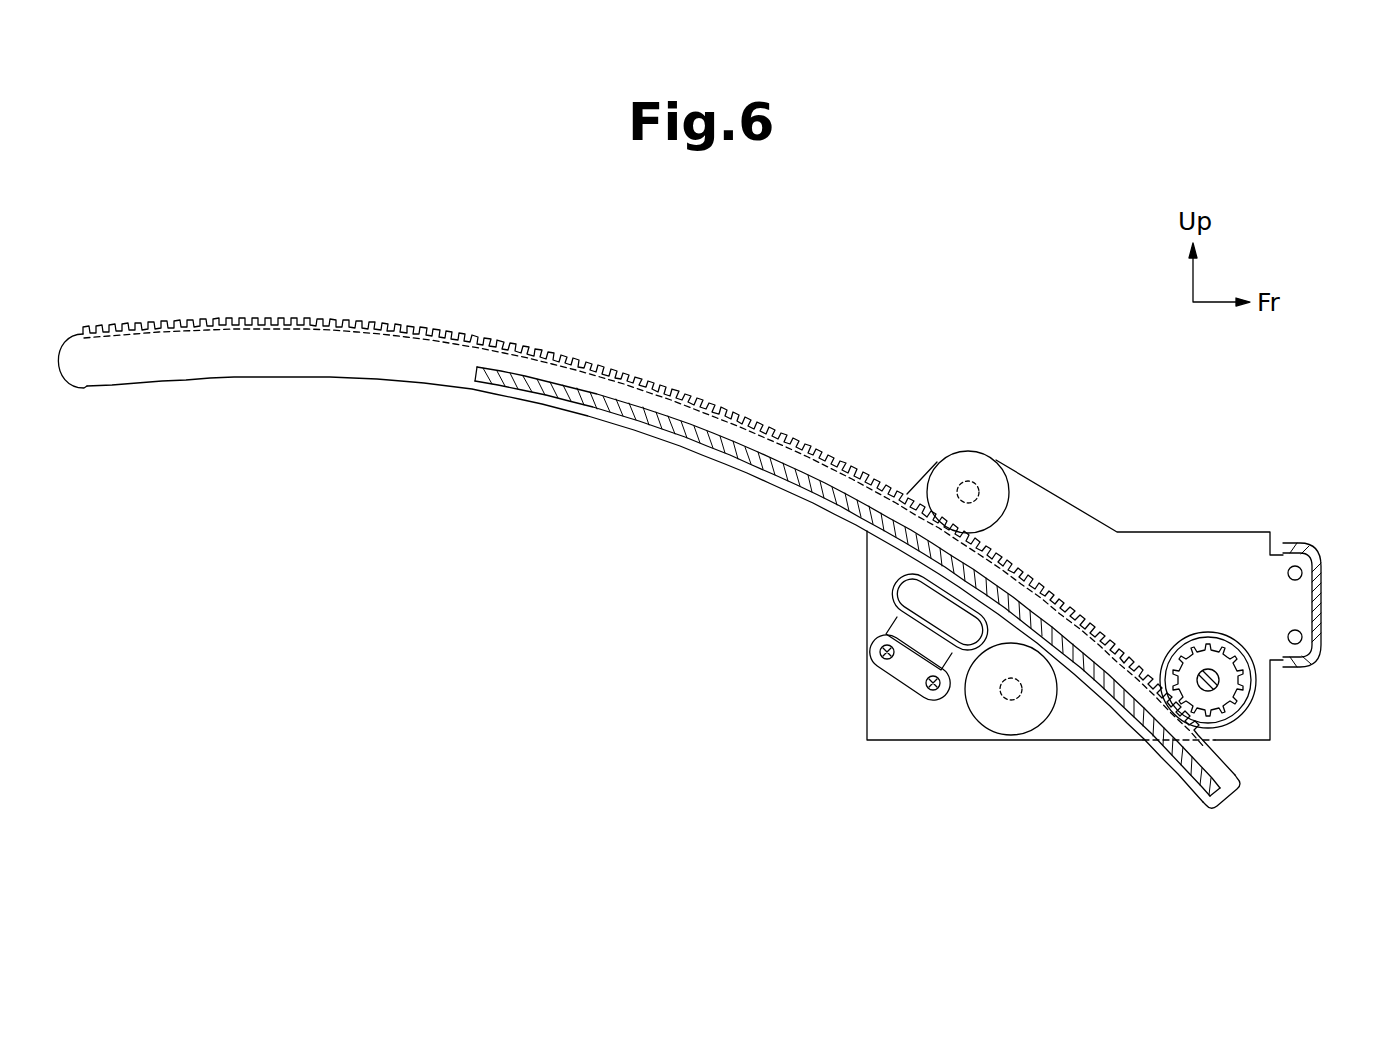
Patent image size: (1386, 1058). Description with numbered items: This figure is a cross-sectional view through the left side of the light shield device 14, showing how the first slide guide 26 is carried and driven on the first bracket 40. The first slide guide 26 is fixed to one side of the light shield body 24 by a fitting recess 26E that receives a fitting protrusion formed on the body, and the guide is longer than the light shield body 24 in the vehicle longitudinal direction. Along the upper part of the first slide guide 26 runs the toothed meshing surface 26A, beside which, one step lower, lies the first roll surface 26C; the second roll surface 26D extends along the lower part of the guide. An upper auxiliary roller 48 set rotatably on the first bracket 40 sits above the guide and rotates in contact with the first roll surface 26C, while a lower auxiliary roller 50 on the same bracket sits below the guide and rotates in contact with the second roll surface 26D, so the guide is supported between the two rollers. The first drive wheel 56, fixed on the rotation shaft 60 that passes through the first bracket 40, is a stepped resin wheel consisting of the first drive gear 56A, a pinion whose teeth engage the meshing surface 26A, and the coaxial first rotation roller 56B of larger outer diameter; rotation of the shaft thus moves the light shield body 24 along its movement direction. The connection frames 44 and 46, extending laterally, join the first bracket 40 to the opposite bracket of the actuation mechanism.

The light shield device 14 is at (404, 298).
The light shield body 24 is at (592, 412).
The first slide guide 26 is at (360, 384).
The meshing surface 26A is at (1078, 612).
The first roll surface 26C is at (884, 492).
The second roll surface 26D is at (1098, 697).
The fitting recess 26E is at (533, 380).
The first bracket 40 is at (1038, 483).
The connection frame 44 is at (1322, 603).
The connection frame 46 is at (892, 587).
The upper auxiliary roller 48 is at (950, 451).
The lower auxiliary roller 50 is at (971, 712).
The first drive wheel 56 is at (1352, 680).
The first drive gear 56A is at (1246, 683).
The first rotation roller 56B is at (1250, 702).
The rotation shaft 60 is at (1200, 669).